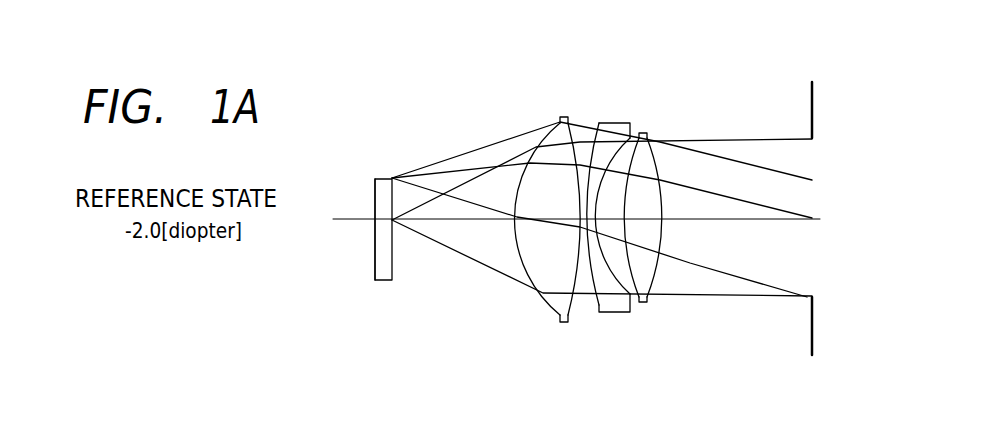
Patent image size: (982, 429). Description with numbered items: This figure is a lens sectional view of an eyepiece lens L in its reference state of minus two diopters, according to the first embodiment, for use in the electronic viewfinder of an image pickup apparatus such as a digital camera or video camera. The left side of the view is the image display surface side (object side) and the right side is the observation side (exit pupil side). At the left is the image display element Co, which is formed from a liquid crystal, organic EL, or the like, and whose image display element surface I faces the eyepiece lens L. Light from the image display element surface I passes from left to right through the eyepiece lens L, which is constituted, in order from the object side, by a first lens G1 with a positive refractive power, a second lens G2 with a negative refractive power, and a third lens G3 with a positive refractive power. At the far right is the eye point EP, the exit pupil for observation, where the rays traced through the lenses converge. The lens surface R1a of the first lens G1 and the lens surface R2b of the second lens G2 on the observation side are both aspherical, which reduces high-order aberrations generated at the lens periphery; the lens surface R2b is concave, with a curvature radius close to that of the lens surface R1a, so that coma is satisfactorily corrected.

The image display element Co is at (385, 183).
The image display element surface I is at (380, 264).
The eyepiece lens L is at (673, 68).
The first lens G1 is at (540, 210).
The second lens G2 is at (617, 214).
The third lens G3 is at (651, 133).
The lens surface R1a is at (528, 273).
The lens surface R2b is at (617, 277).
The eye point EP is at (814, 95).